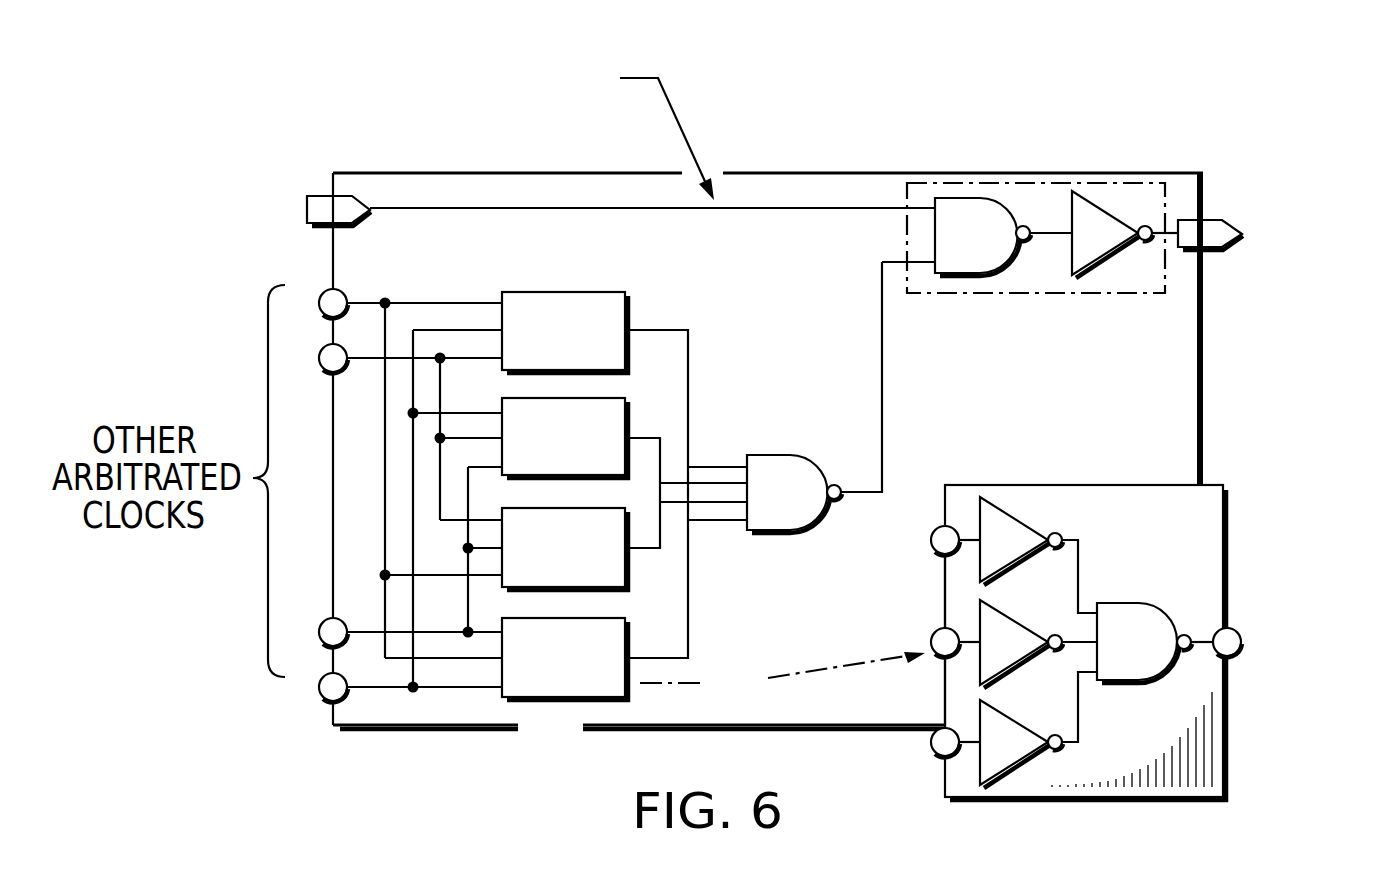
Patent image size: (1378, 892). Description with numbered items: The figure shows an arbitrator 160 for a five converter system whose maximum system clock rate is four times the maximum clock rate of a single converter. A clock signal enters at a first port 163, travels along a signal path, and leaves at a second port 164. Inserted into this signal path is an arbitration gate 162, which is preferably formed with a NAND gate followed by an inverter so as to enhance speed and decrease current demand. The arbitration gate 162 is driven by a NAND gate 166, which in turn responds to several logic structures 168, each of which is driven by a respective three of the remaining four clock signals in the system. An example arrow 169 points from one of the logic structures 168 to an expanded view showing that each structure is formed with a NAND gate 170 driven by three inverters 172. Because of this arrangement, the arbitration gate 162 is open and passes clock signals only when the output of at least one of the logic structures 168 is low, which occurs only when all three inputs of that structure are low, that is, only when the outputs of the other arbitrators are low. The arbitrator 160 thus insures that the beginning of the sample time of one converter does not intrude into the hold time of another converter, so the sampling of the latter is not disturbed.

The arbitrator 160 is at (927, 170).
The arbitration gate 162 is at (1042, 298).
The port 163 is at (318, 185).
The port 164 is at (1217, 208).
The NAND gate 166 is at (814, 419).
The logic structures 168 is at (565, 700).
The example arrow 169 is at (782, 678).
The NAND gate 170 is at (1155, 621).
The inverters 172 is at (1036, 640).